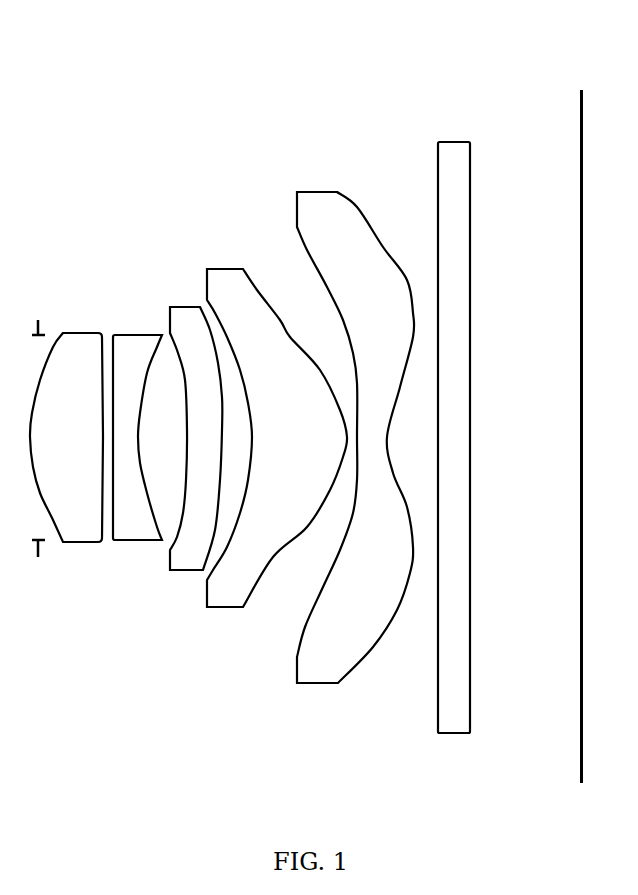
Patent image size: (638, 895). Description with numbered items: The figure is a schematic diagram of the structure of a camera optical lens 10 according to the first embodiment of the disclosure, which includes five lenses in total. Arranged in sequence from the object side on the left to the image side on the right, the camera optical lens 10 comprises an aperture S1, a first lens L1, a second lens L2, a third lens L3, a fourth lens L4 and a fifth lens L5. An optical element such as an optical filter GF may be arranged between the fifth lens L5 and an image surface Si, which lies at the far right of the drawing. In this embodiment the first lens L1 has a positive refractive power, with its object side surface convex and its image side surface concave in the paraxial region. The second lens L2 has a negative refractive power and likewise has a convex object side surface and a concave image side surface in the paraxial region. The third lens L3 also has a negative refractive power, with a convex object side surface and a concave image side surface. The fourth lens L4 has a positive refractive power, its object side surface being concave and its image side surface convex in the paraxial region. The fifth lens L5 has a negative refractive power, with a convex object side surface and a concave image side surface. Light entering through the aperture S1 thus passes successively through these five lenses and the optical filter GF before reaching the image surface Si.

The camera optical lens 10 is at (325, 36).
The aperture S1 is at (40, 424).
The first lens L1 is at (66, 422).
The second lens L2 is at (137, 424).
The third lens L3 is at (196, 423).
The fourth lens L4 is at (277, 424).
The fifth lens L5 is at (355, 422).
The optical filter GF is at (454, 421).
The image surface Si is at (582, 423).